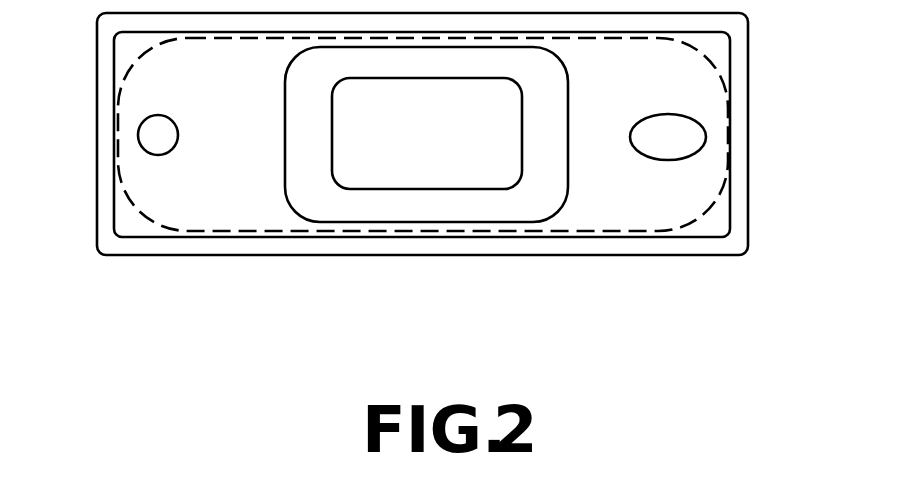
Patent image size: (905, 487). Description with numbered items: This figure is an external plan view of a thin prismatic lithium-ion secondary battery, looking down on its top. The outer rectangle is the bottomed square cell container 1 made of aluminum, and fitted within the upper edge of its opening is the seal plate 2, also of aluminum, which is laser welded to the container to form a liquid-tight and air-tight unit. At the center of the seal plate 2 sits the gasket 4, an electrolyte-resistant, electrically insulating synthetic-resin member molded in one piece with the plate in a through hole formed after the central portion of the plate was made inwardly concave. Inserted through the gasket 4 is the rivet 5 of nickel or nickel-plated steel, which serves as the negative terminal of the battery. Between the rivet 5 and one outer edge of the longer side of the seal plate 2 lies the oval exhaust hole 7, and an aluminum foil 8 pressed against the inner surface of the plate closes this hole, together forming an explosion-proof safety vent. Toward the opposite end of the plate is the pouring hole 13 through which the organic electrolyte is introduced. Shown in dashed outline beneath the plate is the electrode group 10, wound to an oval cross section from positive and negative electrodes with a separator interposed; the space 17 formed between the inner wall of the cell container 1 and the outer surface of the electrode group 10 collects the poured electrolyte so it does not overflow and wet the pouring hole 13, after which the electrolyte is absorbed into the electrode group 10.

The cell container 1 is at (366, 243).
The seal plate 2 is at (735, 53).
The gasket 4 is at (542, 199).
The rivet 5 is at (446, 168).
The exhaust hole 7 is at (705, 137).
The aluminum foil 8 is at (682, 140).
The electrode group 10 is at (700, 207).
The pouring hole 13 is at (163, 135).
The space 17 is at (123, 60).